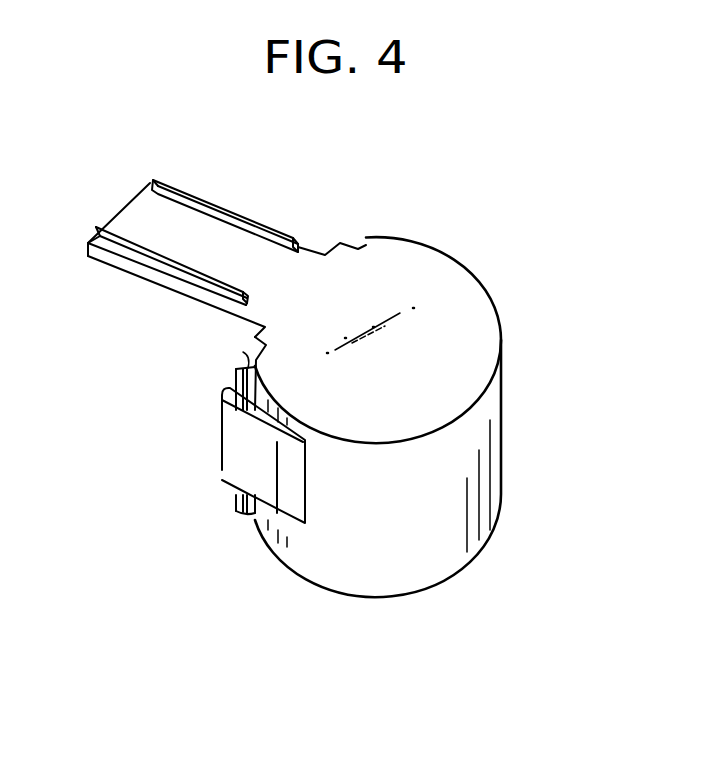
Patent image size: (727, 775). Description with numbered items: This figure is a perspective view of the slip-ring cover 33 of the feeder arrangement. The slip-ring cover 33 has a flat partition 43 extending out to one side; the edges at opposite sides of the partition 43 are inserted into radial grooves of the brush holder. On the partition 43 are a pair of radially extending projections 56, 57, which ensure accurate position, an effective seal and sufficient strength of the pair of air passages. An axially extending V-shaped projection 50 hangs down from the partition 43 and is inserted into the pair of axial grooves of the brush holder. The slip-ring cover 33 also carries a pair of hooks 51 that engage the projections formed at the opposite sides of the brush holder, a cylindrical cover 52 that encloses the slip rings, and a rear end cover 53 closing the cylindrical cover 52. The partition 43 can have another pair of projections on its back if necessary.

The slip-ring cover 33 is at (424, 437).
The partition 43 is at (143, 210).
The axially extending V-shaped projection 50 is at (238, 367).
The hook 51 is at (235, 462).
The cylindrical cover 52 is at (366, 563).
The rear end cover 53 is at (432, 327).
The radially extending projection 56 is at (267, 228).
The radially extending projection 57 is at (113, 244).